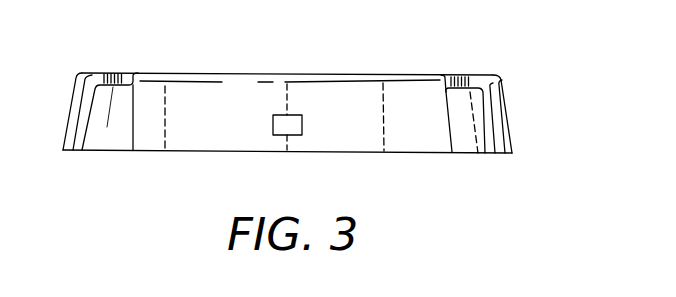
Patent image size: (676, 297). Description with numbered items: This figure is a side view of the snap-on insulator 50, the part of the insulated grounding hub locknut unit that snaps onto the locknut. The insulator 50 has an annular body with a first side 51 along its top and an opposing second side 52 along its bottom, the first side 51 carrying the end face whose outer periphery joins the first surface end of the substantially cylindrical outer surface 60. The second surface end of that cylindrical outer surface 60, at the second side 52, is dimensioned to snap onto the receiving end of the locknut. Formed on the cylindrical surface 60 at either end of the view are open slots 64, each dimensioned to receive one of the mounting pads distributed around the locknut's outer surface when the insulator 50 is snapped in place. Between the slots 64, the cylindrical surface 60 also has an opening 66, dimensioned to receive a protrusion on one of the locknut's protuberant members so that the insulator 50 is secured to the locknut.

The snap-on insulator 50 is at (418, 61).
The first side 51 is at (337, 73).
The second side 52 is at (345, 153).
The cylindrical outer surface 60 is at (212, 118).
The open slots 64 is at (113, 127).
The openings 66 is at (288, 125).